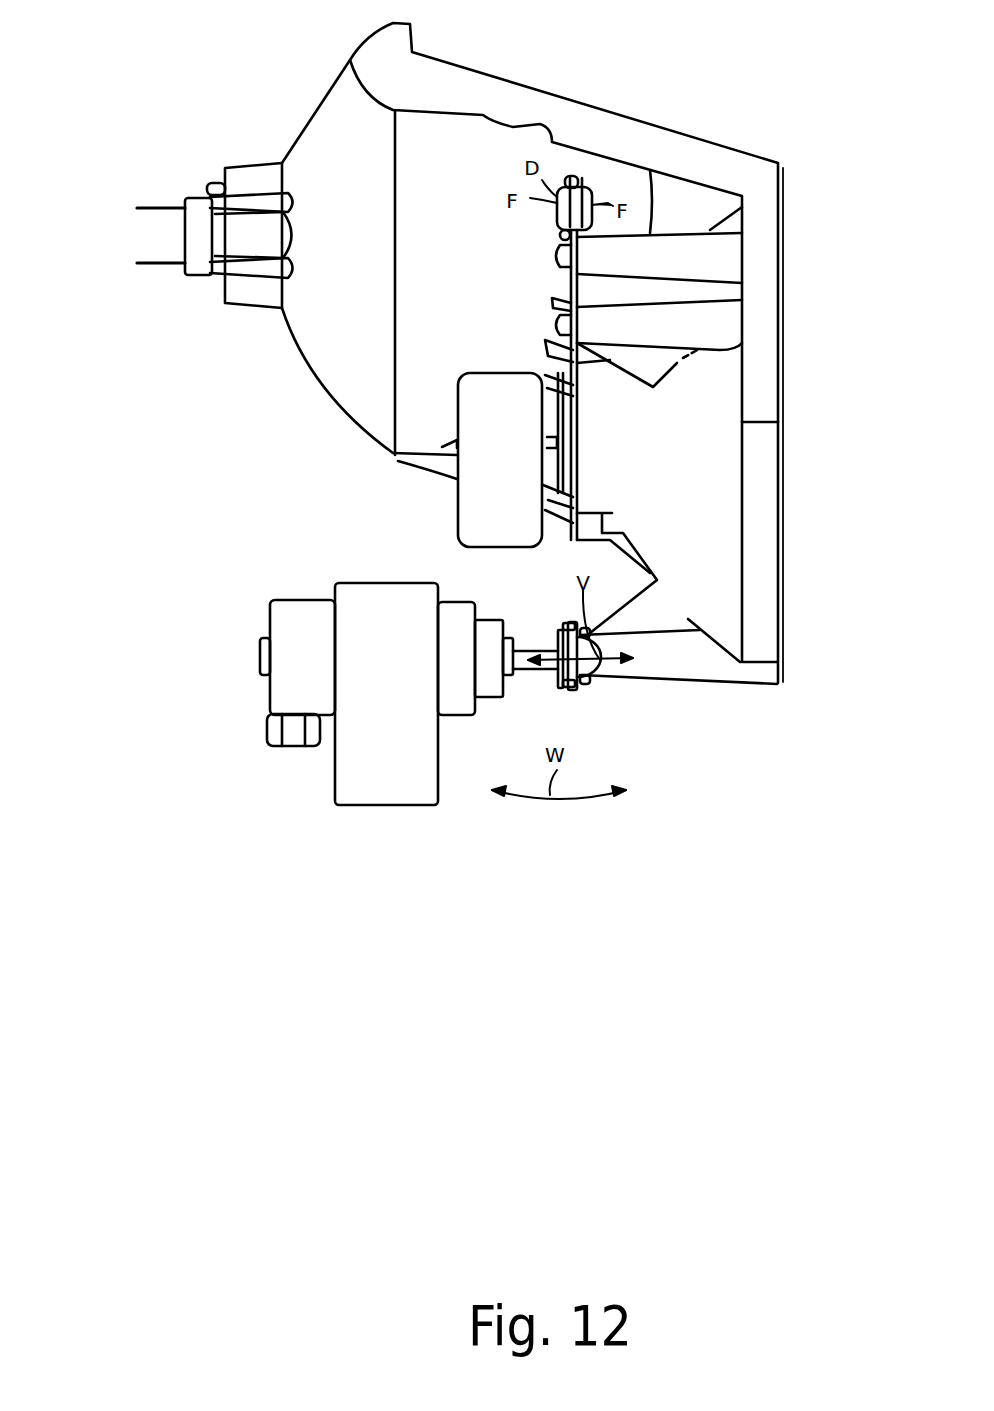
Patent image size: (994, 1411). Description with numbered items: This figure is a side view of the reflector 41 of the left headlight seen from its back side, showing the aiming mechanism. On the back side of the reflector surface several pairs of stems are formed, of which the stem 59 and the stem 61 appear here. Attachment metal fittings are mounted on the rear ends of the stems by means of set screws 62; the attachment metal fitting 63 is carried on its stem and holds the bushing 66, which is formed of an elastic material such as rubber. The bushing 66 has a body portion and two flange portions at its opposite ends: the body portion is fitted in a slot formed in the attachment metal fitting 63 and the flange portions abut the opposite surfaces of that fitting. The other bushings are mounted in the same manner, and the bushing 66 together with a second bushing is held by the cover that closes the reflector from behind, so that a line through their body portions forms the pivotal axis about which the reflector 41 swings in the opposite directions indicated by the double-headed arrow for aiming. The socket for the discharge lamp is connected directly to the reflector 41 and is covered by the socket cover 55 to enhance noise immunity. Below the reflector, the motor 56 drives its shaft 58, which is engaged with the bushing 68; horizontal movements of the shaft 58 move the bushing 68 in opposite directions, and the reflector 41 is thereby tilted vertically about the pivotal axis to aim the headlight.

The reflector 41 is at (465, 92).
The socket cover 55 is at (477, 503).
The motor 56 is at (352, 593).
The shaft 58 is at (532, 648).
The stem 59 is at (718, 322).
The stem 61 is at (662, 663).
The set screw 62 is at (557, 255).
The attachment metal fitting 63 is at (573, 174).
The bushing 66 is at (551, 226).
The bushing 68 is at (555, 675).